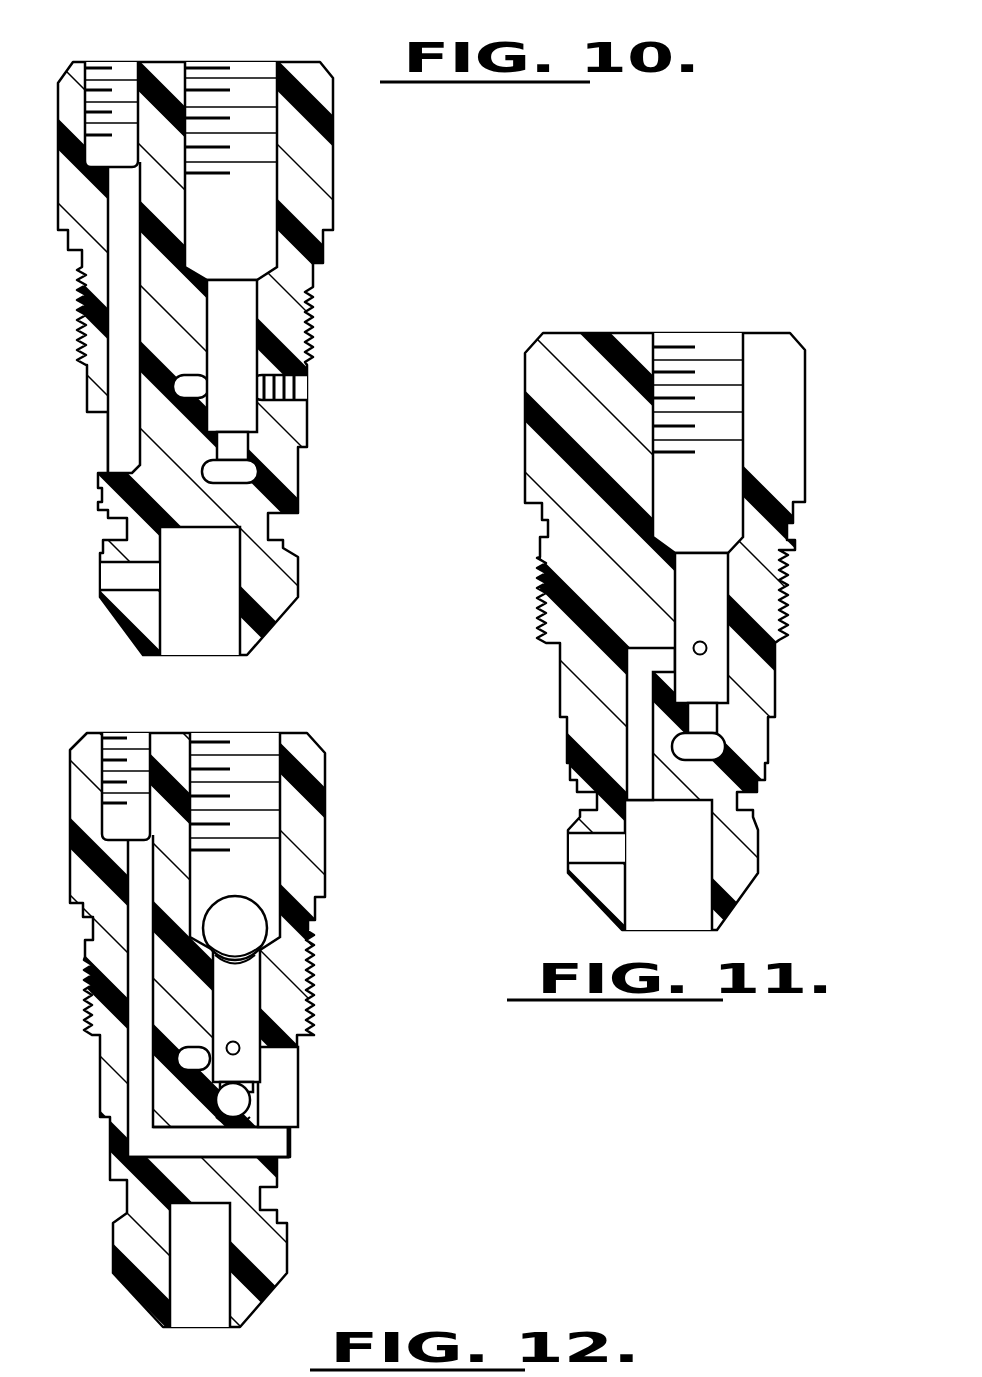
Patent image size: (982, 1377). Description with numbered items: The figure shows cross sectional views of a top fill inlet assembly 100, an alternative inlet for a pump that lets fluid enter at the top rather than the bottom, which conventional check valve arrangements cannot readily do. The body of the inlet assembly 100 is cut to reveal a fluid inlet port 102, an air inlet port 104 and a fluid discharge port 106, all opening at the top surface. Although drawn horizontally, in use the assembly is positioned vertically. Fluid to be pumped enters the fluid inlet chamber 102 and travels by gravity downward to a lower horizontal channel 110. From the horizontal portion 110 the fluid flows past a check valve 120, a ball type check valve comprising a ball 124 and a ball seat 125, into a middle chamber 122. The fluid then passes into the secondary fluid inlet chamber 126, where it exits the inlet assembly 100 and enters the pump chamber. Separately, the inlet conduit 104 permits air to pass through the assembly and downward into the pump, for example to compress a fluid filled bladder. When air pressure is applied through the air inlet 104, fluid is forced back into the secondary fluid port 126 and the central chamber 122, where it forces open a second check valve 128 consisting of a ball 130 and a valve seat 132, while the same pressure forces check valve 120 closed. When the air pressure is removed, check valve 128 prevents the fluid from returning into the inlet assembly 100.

In FIG. 10, the top fill inlet assembly 100 is at (372, 186).
In FIG. 11, the top fill inlet assembly 100 is at (820, 336).
In FIG. 12, the top fill inlet assembly 100 is at (491, 891).
In FIG. 12, the fluid inlet port 102 is at (132, 740).
In FIG. 10, the air inlet port 104 is at (118, 88).
In FIG. 10, the fluid discharge port 106 is at (240, 88).
In FIG. 11, the fluid discharge port 106 is at (707, 347).
In FIG. 12, the fluid discharge port 106 is at (247, 742).
In FIG. 12, the lower horizontal channel 110 is at (173, 1143).
In FIG. 12, the check valve 120 is at (262, 1095).
In FIG. 10, the middle chamber 122 is at (245, 325).
In FIG. 11, the middle chamber 122 is at (710, 590).
In FIG. 12, the middle chamber 122 is at (243, 1013).
In FIG. 12, the ball 124 is at (215, 1100).
In FIG. 12, the ball seat 125 is at (245, 1122).
In FIG. 10, the secondary fluid inlet chamber 126 is at (124, 317).
In FIG. 11, the secondary fluid inlet chamber 126 is at (642, 697).
In FIG. 12, the secondary fluid inlet chamber 126 is at (193, 1060).
In FIG. 12, the check valve 128 is at (262, 905).
In FIG. 12, the ball 130 is at (265, 950).
In FIG. 12, the valve seat 132 is at (250, 963).